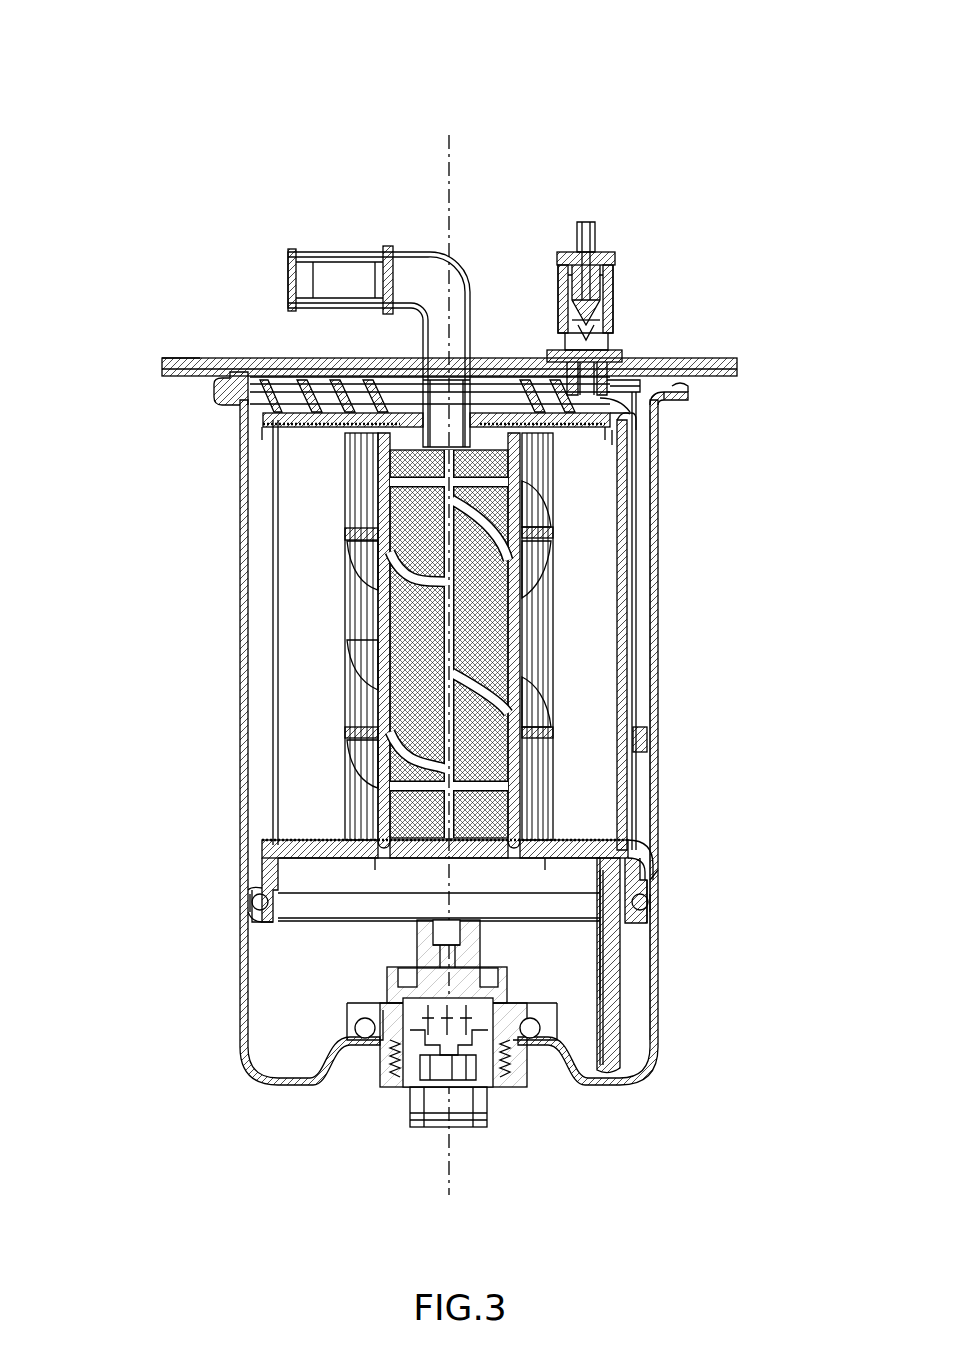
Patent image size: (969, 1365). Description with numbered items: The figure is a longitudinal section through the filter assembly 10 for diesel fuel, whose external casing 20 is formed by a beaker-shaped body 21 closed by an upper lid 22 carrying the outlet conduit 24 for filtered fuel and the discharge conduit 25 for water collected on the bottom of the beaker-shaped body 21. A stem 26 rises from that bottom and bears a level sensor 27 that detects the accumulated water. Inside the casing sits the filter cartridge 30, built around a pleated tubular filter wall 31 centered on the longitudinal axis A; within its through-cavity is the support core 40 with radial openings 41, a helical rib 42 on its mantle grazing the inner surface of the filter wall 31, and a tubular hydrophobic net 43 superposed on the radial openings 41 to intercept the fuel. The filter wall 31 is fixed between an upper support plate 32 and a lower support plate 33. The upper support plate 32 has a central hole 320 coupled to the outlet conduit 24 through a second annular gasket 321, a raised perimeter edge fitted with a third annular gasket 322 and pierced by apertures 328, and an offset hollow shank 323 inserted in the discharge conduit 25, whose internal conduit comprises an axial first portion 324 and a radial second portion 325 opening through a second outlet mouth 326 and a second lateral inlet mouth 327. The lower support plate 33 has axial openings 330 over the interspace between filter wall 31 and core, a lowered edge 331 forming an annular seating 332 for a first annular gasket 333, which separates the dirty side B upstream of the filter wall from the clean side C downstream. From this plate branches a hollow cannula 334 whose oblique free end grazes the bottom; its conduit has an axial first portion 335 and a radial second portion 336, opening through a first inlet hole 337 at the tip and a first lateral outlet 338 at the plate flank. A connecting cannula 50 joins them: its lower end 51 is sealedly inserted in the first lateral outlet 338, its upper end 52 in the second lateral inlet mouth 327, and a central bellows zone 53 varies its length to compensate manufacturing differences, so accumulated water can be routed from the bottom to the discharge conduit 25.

The filter assembly 10 is at (158, 125).
The longitudinal axis A is at (449, 168).
The first environment B is at (262, 757).
The second environment C is at (490, 790).
The external casing 20 is at (165, 378).
The beaker-shaped body 21 is at (242, 548).
The upper lid 22 is at (423, 415).
The outlet conduit 24 is at (333, 243).
The discharge conduit 25 is at (603, 272).
The stem 26 is at (363, 1042).
The level sensor 27 is at (460, 935).
The filter cartridge 30 is at (258, 597).
The tubular filter wall 31 is at (290, 620).
The upper support plate 32 is at (262, 422).
The lower support plate 33 is at (260, 880).
The support core 40 is at (374, 769).
The radial openings 41 is at (415, 685).
The rib 42 is at (375, 555).
The hydrophobic net 43 is at (372, 715).
The connecting cannula 50 is at (657, 612).
The lower end 51 is at (632, 858).
The upper end 52 is at (612, 428).
The bellows zone 53 is at (648, 742).
The central hole 320 is at (490, 332).
The second annular gasket 321 is at (352, 397).
The third annular gasket 322 is at (690, 394).
The offset hollow shank 323 is at (622, 356).
The first portion of longitudinal conduit 324 is at (612, 333).
The second portion of longitudinal conduit 325 is at (610, 440).
The second outlet mouth 326 is at (605, 318).
The second lateral inlet mouth 327 is at (605, 412).
The apertures 328 is at (287, 397).
The axial openings 330 is at (375, 848).
The lowered edge 331 is at (330, 916).
The annular seating 332 is at (250, 903).
The first annular gasket 333 is at (250, 910).
The hollow cannula 334 is at (565, 1003).
The first portion of longitudinal through-conduit 335 is at (607, 1000).
The second portion of longitudinal through-conduit 336 is at (650, 880).
The first inlet hole 337 is at (603, 1060).
The first lateral outlet 338 is at (650, 905).